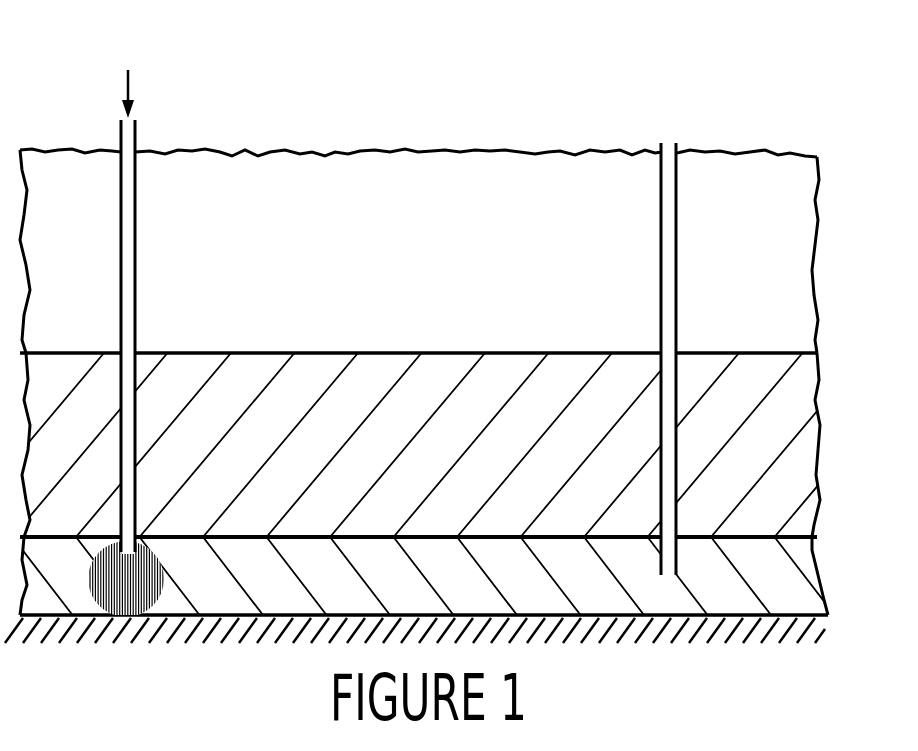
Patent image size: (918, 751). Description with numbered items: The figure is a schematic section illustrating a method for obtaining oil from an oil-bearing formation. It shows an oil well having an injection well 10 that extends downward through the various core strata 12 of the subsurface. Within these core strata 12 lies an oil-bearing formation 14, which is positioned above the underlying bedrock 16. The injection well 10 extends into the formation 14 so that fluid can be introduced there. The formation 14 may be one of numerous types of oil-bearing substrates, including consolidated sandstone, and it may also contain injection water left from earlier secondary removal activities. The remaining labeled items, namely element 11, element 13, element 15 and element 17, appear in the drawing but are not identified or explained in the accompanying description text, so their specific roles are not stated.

The injection well 10 is at (127, 288).
The formation 11 is at (770, 244).
The core strata 12 is at (785, 430).
The lower layer 13 is at (800, 567).
The oil-bearing formation 14 is at (758, 638).
The second pipe 15 is at (672, 288).
The bedrock 16 is at (97, 548).
The injection flow 17 is at (130, 76).